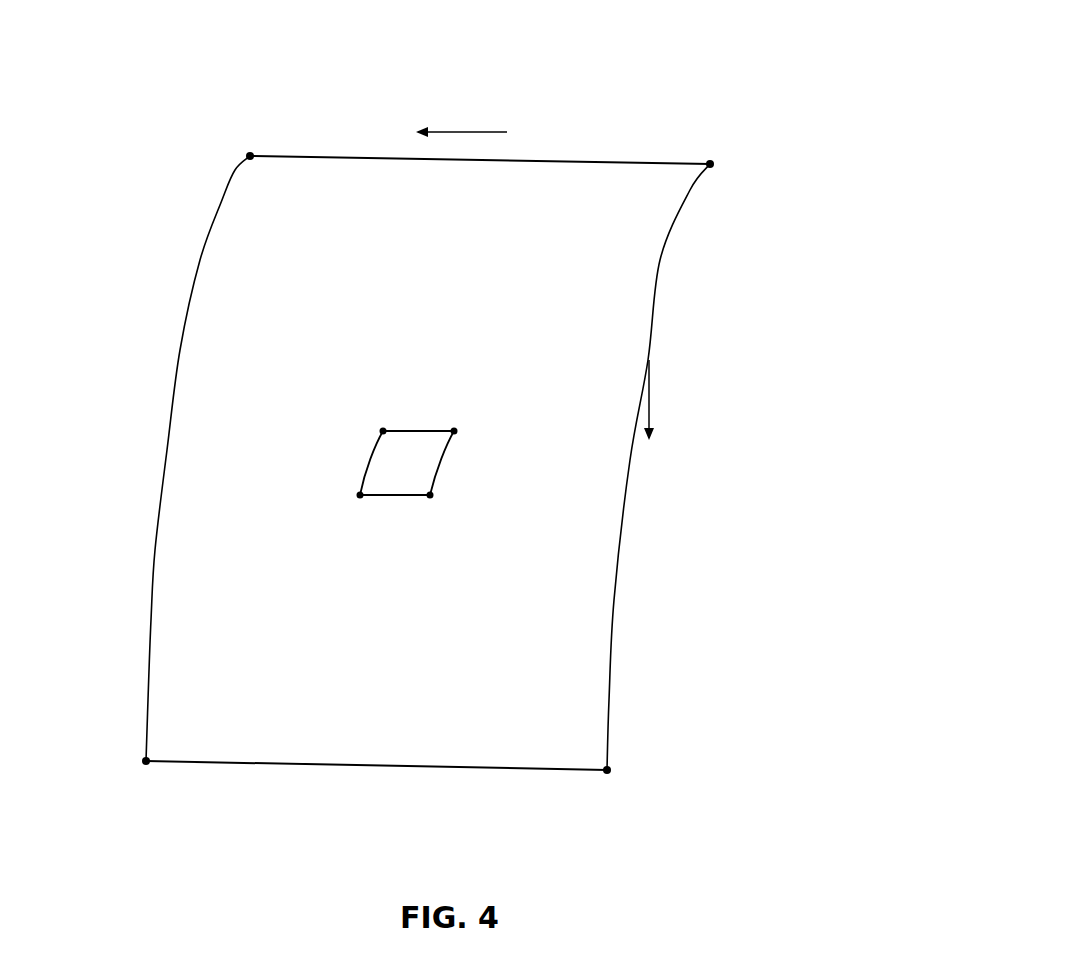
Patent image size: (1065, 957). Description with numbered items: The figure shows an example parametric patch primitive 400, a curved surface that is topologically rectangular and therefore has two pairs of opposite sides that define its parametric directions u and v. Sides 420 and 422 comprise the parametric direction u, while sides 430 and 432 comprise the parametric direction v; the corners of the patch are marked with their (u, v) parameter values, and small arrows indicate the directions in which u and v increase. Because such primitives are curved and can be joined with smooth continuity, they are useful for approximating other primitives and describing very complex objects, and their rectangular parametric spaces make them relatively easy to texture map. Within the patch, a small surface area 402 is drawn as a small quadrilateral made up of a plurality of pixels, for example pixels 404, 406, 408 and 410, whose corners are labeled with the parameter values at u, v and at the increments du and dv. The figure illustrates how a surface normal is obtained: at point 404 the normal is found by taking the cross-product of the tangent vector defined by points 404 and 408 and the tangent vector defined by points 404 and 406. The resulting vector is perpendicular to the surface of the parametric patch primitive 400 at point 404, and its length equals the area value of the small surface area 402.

The parametric patch primitive 400 is at (762, 72).
The small surface area 402 is at (415, 431).
The pixel 404 is at (455, 433).
The pixel 406 is at (430, 496).
The pixel 408 is at (383, 431).
The pixel 410 is at (360, 495).
The side 420 is at (613, 603).
The side 422 is at (152, 580).
The side 430 is at (272, 155).
The side 432 is at (390, 771).